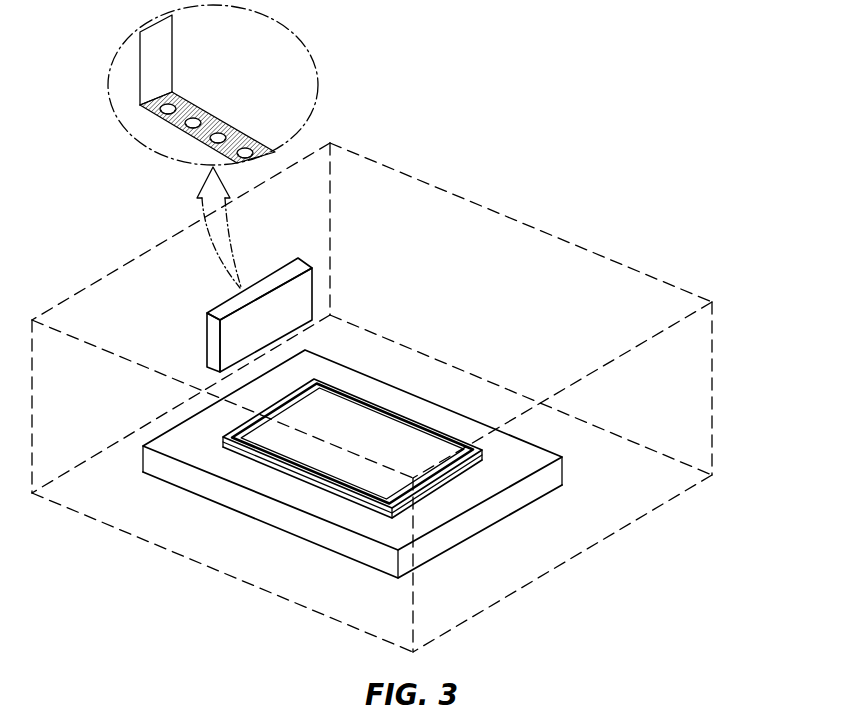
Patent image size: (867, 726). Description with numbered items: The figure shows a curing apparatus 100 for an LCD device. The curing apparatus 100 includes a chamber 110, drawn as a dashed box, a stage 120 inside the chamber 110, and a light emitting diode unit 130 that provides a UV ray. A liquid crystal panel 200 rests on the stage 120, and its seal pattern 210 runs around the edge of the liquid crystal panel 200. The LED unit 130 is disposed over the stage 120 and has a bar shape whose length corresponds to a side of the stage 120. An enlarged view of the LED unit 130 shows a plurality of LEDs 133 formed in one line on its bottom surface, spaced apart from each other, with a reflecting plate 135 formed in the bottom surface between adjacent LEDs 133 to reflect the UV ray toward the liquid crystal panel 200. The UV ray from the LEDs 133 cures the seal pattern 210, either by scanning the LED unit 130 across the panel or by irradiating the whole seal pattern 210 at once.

The curing apparatus 100 is at (587, 132).
The chamber 110 is at (693, 383).
The stage 120 is at (553, 477).
The LED unit 130 is at (272, 267).
The LEDs 133 is at (167, 120).
The reflecting plate 135 is at (147, 108).
The liquid crystal panel 200 is at (350, 420).
The seal pattern 210 is at (405, 420).